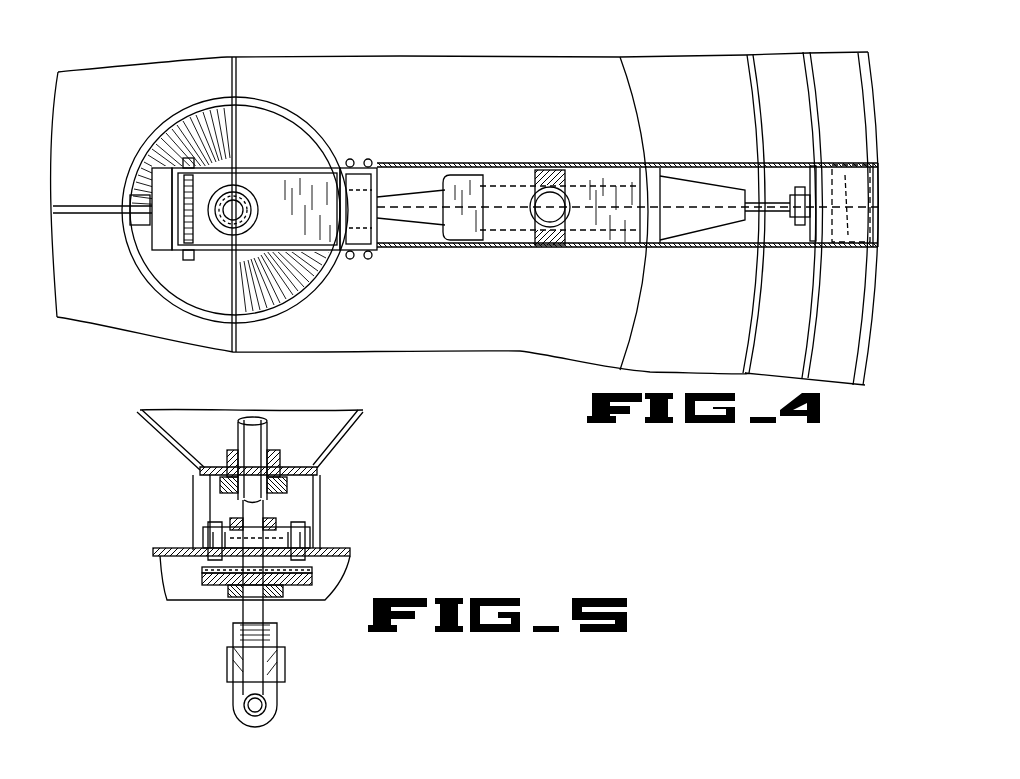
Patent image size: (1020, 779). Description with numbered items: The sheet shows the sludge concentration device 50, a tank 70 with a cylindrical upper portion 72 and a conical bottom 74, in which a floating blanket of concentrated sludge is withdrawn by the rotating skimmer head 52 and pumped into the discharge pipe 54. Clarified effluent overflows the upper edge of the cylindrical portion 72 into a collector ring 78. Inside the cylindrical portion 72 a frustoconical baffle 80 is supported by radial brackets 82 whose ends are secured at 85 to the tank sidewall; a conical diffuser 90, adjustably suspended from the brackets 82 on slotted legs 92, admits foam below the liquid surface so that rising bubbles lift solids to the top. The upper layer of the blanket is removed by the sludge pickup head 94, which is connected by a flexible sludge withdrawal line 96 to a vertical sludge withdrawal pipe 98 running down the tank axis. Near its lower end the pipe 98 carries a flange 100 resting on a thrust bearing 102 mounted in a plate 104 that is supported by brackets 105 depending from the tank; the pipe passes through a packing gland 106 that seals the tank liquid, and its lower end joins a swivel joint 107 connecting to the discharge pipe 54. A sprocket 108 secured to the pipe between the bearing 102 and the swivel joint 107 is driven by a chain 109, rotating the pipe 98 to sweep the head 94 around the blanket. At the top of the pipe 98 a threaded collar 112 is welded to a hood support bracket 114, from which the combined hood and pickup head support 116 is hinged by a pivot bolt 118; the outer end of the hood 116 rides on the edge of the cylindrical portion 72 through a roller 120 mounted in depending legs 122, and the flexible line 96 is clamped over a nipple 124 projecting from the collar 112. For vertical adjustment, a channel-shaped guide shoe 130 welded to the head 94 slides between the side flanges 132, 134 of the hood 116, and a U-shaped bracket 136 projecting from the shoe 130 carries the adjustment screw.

In FIG. 4, the sludge concentration device 50 is at (755, 42).
In FIG. 4, the rotating skimmer head 52 is at (645, 166).
In FIG. 5, the sludge discharge pipe 54 is at (268, 706).
In FIG. 4, the tank 70 is at (520, 351).
In FIG. 5, the tank 70 is at (157, 410).
In FIG. 4, the cylindrical upper portion 72 is at (806, 54).
In FIG. 5, the conical bottom 74 is at (366, 412).
In FIG. 4, the collector ring 78 is at (848, 350).
In FIG. 4, the frustoconical baffle 80 is at (738, 58).
In FIG. 4, the brackets 82 is at (236, 72).
In FIG. 4, the bracket securing point 85 is at (798, 192).
In FIG. 4, the conical diffuser 90 is at (282, 108).
In FIG. 4, the slotted legs 92 is at (135, 186).
In FIG. 4, the sludge pickup head 94 is at (685, 242).
In FIG. 4, the flexible sludge withdrawal line 96 is at (235, 192).
In FIG. 5, the sludge withdrawal pipe 98 is at (256, 418).
In FIG. 5, the flange 100 is at (272, 516).
In FIG. 5, the thrust bearing 102 is at (218, 526).
In FIG. 5, the plate 104 is at (348, 553).
In FIG. 5, the brackets 105 is at (320, 478).
In FIG. 5, the packing gland 106 is at (280, 452).
In FIG. 5, the swivel joint 107 is at (228, 664).
In FIG. 5, the sprocket 108 is at (205, 578).
In FIG. 5, the chain 109 is at (205, 567).
In FIG. 4, the collar 112 is at (256, 205).
In FIG. 4, the hood support bracket 114 is at (318, 178).
In FIG. 4, the hood 116 is at (590, 162).
In FIG. 4, the pivot bolt 118 is at (184, 232).
In FIG. 4, the roller 120 is at (822, 172).
In FIG. 4, the depending legs 122 is at (840, 250).
In FIG. 4, the nipple 124 is at (228, 224).
In FIG. 4, the channel-shaped guide shoe 130 is at (487, 176).
In FIG. 4, the side flange 132 is at (405, 166).
In FIG. 4, the side flange 134 is at (445, 250).
In FIG. 4, the U-shaped bracket 136 is at (545, 232).